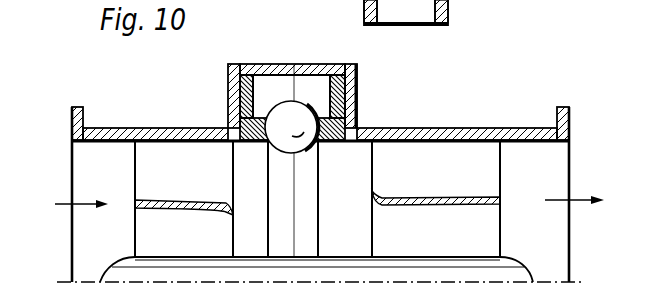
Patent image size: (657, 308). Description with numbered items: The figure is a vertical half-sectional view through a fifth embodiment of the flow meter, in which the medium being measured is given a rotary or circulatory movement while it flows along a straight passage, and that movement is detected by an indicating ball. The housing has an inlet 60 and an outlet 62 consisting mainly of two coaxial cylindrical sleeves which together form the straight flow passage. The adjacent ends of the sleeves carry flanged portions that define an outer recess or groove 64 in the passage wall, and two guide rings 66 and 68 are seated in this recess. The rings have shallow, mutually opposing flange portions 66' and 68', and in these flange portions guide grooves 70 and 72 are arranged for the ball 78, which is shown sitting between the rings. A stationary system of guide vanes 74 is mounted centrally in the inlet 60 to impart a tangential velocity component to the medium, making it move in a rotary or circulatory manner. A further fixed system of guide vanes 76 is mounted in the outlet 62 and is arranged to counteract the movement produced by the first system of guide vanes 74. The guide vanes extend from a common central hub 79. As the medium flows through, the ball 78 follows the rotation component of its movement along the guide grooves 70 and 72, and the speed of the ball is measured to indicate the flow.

The inlet 60 is at (137, 128).
The outlet 62 is at (490, 128).
The outer recess or groove 64 is at (302, 102).
The guide ring 66 is at (222, 96).
The flange portion 66' is at (231, 119).
The guide ring 68 is at (361, 96).
The flange portion 68' is at (355, 119).
The guide groove 70 is at (270, 102).
The guide groove 72 is at (316, 102).
The system of guide vanes 74 is at (146, 161).
The system of guide vanes 76 is at (483, 163).
The ball 78 is at (306, 149).
The central hub 79 is at (259, 273).